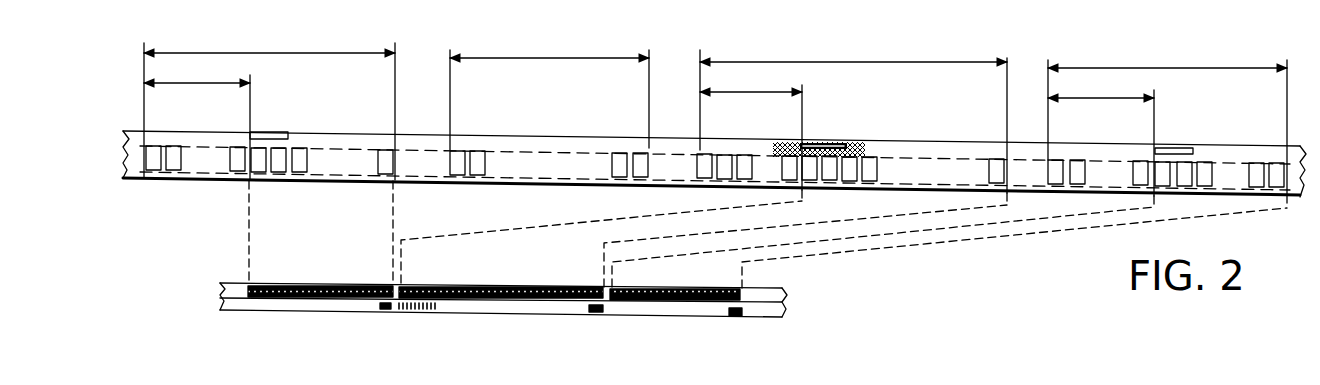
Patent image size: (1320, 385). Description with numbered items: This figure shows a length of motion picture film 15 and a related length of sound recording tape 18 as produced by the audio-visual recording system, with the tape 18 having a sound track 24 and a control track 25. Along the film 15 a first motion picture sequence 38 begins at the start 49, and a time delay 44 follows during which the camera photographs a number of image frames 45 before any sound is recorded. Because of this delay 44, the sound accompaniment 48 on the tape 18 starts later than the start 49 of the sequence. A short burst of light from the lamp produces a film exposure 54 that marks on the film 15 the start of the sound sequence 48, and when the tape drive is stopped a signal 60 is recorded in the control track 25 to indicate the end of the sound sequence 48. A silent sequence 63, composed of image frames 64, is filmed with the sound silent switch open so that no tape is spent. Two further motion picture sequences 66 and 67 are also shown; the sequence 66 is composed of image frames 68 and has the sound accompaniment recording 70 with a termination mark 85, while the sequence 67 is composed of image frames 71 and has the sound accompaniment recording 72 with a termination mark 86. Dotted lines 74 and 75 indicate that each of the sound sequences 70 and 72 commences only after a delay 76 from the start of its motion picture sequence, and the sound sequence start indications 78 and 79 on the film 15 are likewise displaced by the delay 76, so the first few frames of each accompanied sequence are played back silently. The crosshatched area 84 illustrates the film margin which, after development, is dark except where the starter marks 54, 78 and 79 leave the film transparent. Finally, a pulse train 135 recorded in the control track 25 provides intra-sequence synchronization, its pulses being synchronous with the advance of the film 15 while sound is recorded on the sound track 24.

The film 15 is at (123, 144).
The tape 18 is at (236, 290).
The sound track 24 is at (785, 293).
The control track 25 is at (780, 313).
The first motion picture sequence 38 is at (313, 52).
The time delay 44 is at (220, 87).
The image frames 45 is at (174, 171).
The sound accompaniment 48 is at (330, 268).
The start of motion picture sequence 49 is at (143, 69).
The film exposure 54 is at (300, 116).
The signal 60 is at (382, 311).
The silent sequence 63 is at (555, 59).
The image frames 64 is at (458, 151).
The motion picture sequence 66 is at (880, 61).
The motion picture sequence 67 is at (1177, 66).
The image frames 68 is at (712, 165).
The sound accompaniment recording 70 is at (518, 289).
The image frames 71 is at (1078, 160).
The sound accompaniment recording 72 is at (694, 292).
The dotted lines 74 is at (572, 223).
The dotted lines 75 is at (926, 233).
The delay 76 is at (785, 92).
The sound sequence start indication 78 is at (813, 140).
The sound sequence start indication 79 is at (1172, 148).
The crosshatched area 84 is at (860, 144).
The termination mark 85 is at (595, 314).
The termination mark 86 is at (740, 317).
The pulse train 135 is at (437, 307).